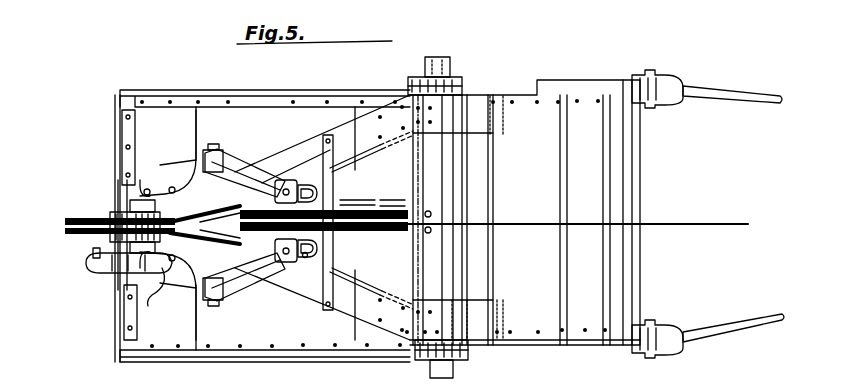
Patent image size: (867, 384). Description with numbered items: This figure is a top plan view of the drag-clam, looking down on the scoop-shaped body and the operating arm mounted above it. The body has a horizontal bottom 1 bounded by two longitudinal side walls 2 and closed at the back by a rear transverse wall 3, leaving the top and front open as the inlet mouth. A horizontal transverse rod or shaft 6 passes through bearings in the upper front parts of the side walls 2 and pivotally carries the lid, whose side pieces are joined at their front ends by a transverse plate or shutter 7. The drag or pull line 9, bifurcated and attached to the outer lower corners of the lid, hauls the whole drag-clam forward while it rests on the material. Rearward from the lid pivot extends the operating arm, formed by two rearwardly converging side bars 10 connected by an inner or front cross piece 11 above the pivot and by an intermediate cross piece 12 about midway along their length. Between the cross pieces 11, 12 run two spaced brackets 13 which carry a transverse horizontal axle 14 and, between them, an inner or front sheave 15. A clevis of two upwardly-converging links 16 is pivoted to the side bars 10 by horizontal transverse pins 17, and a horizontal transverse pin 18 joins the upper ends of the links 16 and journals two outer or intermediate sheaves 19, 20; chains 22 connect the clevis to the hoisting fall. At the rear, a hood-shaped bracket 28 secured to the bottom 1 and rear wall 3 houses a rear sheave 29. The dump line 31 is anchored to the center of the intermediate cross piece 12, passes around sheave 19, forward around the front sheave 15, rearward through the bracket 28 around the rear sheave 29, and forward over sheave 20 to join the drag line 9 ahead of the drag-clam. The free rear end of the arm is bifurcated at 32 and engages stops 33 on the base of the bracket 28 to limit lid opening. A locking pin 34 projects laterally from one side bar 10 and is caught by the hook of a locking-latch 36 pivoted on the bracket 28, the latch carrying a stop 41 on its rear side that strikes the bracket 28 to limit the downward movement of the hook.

The horizontal bottom 1 is at (295, 131).
The longitudinal side walls 2 is at (256, 95).
The rear transverse wall 3 is at (116, 122).
The horizontal transverse rod or shaft 6 is at (441, 51).
The transverse plate or shutter 7 is at (630, 190).
The drag or pull line 9 is at (782, 102).
The side bars 10 is at (322, 217).
The inner or front cross piece 11 is at (392, 140).
The intermediate cross piece 12 is at (326, 144).
The brackets 13 is at (425, 192).
The transverse horizontal axle 14 is at (362, 200).
The inner or front sheave 15 is at (393, 205).
The links 16 is at (262, 162).
The horizontal transverse pins 17 is at (211, 150).
The horizontal transverse pin 18 is at (303, 259).
The outer or intermediate sheave 19 is at (192, 176).
The outer or intermediate sheave 20 is at (200, 256).
The chains 22 is at (290, 180).
The hood-shaped bracket 28 is at (120, 200).
The rear sheave 29 is at (68, 222).
The dump line 31 is at (582, 208).
The bifurcated portion 32 is at (148, 189).
The stops 33 is at (173, 187).
The locking pin 34 is at (150, 306).
The locking-latch 36 is at (98, 277).
The stop 41 is at (93, 253).